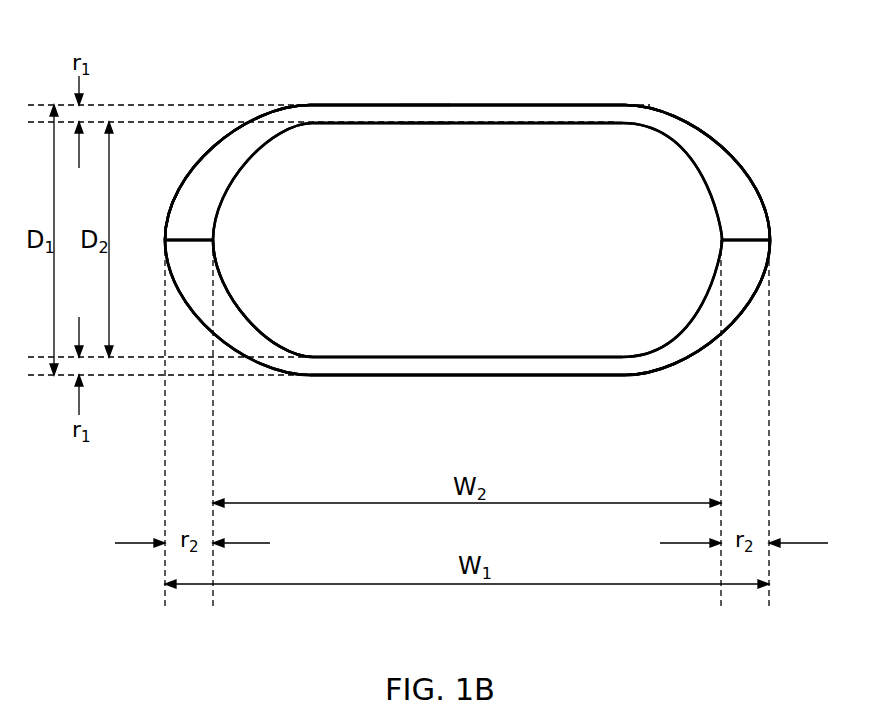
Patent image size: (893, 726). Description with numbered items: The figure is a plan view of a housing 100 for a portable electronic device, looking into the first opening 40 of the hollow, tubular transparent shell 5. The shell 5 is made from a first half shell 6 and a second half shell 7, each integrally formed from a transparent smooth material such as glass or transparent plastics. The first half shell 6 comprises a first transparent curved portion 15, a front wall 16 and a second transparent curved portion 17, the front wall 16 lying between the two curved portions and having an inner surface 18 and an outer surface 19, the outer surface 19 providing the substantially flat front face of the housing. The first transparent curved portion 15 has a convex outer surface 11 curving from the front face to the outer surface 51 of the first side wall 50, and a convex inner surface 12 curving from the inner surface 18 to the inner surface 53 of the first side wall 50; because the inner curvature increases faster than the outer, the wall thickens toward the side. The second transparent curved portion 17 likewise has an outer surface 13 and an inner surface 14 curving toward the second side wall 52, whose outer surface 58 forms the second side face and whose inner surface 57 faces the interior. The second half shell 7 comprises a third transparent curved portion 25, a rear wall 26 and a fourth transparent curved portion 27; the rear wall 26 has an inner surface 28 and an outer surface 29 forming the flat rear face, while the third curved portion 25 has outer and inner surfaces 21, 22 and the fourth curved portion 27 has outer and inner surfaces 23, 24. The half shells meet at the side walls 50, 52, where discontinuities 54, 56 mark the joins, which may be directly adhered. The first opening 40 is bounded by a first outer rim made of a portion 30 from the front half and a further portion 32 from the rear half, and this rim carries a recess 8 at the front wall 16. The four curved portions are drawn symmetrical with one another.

The transparent shell 5 is at (799, 102).
The first half shell 6 is at (562, 78).
The second half shell 7 is at (606, 402).
The recess 8 is at (425, 115).
The outer surface of first transparent curved portion 11 is at (207, 153).
The inner surface of first transparent curved portion 12 is at (258, 163).
The outer surface of second transparent curved portion 13 is at (720, 152).
The inner surface of second transparent curved portion 14 is at (677, 165).
The first transparent curved portion 15 is at (259, 118).
The front wall 16 is at (482, 105).
The second transparent curved portion 17 is at (698, 131).
The inner surface of front wall 18 is at (448, 124).
The outer surface of front wall 19 is at (452, 105).
The outer surface of third transparent curved portion 21 is at (240, 345).
The inner surface of third transparent curved portion 22 is at (272, 327).
The outer surface of fourth transparent curved portion 23 is at (727, 322).
The inner surface of fourth transparent curved portion 24 is at (673, 320).
The third transparent curved portion 25 is at (207, 321).
The rear wall 26 is at (470, 378).
The fourth transparent curved portion 27 is at (679, 361).
The inner surface of rear wall 28 is at (432, 357).
The outer surface of rear wall 29 is at (430, 378).
The portion of first outer rim 30 is at (570, 375).
The further portion of first outer rim 32 is at (600, 116).
The first opening 40 is at (429, 275).
The first side wall 50 is at (137, 266).
The outer surface of first side wall 51 is at (165, 240).
The second side wall 52 is at (804, 237).
The inner surface of first side wall 53 is at (215, 240).
The discontinuity 54 is at (190, 240).
The discontinuity 56 is at (750, 240).
The inner surface of second side wall 57 is at (720, 240).
The outer surface of second side wall 58 is at (771, 242).
The housing 100 is at (805, 312).